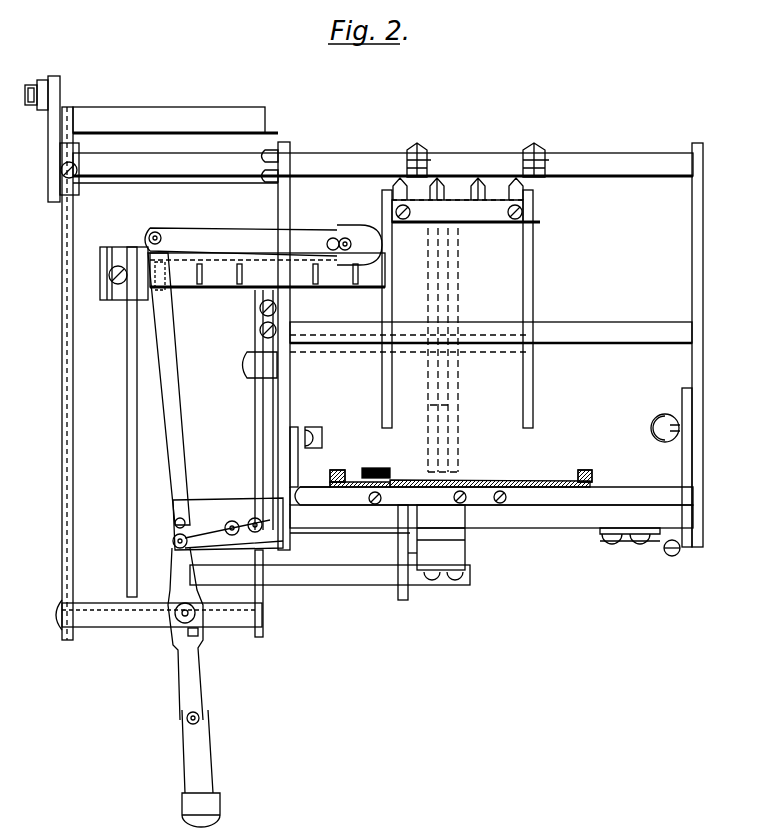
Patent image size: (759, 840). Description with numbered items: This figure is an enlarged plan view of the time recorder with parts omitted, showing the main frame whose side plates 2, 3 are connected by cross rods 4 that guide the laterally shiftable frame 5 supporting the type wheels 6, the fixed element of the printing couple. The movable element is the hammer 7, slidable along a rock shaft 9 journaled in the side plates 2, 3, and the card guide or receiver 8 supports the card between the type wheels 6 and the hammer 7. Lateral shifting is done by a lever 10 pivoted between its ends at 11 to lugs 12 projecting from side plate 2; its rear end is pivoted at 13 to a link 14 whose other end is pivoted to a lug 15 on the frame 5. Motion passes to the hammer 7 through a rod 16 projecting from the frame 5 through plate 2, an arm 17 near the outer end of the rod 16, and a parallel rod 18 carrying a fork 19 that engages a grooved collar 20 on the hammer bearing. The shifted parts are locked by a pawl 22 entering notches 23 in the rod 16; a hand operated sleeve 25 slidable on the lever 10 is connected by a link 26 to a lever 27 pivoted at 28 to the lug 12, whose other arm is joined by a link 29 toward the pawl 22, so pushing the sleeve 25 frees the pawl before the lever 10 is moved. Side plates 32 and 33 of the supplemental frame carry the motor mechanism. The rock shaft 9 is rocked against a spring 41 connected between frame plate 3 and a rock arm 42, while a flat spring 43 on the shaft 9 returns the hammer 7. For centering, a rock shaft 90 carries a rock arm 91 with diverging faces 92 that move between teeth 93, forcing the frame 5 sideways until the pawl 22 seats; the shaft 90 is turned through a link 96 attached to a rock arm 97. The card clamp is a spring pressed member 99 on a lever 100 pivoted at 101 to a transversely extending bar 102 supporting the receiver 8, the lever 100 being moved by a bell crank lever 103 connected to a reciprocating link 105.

The side plate 2 is at (285, 142).
The side plate 3 is at (703, 143).
The cross rods 4 is at (617, 330).
The laterally shiftable frame 5 is at (533, 392).
The type wheels 6 is at (452, 404).
The hammer 7 is at (465, 535).
The card guide or receiver 8 is at (337, 470).
The rock shaft 9 is at (540, 525).
The lever 10 is at (172, 400).
The pivot 11 is at (182, 519).
The lugs 12 is at (222, 500).
The pivot 13 is at (150, 232).
The link 14 is at (241, 244).
The lug 15 is at (355, 228).
The rod 16 is at (220, 287).
The arm 17 is at (130, 402).
The rod 18 is at (305, 580).
The fork 19 is at (405, 554).
The grooved collar 20 is at (398, 535).
The pawl 22 is at (278, 272).
The notches 23 is at (340, 286).
The hand operated piece or sleeve 25 is at (200, 758).
The link 26 is at (198, 664).
The lever 27 is at (212, 545).
The pivot 28 is at (282, 546).
The link 29 is at (262, 442).
The side plate 32 is at (262, 606).
The side plate 33 is at (62, 548).
The spring 41 is at (650, 430).
The rock arm 42 is at (682, 455).
The flat spring 43 is at (630, 540).
The rock shaft 90 is at (152, 166).
The rock arm 91 is at (420, 145).
The diverging faces 92 is at (428, 165).
The teeth 93 is at (479, 205).
The link 96 is at (44, 80).
The rock arm 97 is at (50, 135).
The spring pressed member 99 is at (375, 468).
The lever 100 is at (416, 487).
The pivot 101 is at (505, 480).
The transversely extending bar 102 is at (565, 515).
The bell crank lever 103 is at (295, 458).
The reciprocating link 105 is at (318, 428).